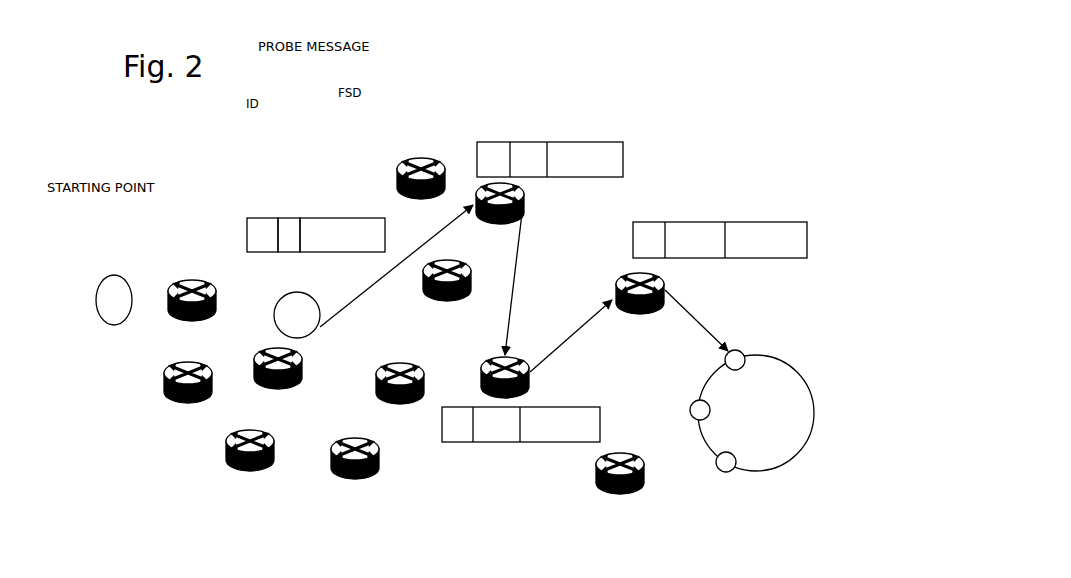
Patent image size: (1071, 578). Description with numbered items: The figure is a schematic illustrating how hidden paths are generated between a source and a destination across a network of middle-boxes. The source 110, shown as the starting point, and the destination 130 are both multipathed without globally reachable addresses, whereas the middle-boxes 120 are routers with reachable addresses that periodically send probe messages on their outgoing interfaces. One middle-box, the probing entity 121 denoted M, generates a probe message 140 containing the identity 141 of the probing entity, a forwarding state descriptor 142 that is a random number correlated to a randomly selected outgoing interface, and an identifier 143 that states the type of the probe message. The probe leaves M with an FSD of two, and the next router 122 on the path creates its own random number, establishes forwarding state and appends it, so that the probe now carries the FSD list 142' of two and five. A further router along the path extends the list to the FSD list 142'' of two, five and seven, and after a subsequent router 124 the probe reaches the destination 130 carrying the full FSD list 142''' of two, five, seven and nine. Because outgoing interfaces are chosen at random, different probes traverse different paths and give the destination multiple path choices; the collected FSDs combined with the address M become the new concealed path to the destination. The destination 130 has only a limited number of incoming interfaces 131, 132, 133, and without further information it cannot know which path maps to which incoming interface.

The source 110 is at (113, 326).
The middle-boxes 120 is at (178, 401).
The probing entity M 121 is at (274, 311).
The next router 122 is at (527, 199).
The router on probe path 124 is at (667, 289).
The destination 130 is at (770, 476).
The incoming interface 131 is at (718, 473).
The incoming interface 132 is at (690, 410).
The incoming interface 133 is at (723, 360).
The probe message 140 is at (335, 155).
The identity of the probing entity 141 is at (258, 218).
The forwarding state descriptor (FSD) 142 is at (318, 184).
The identifier of probe message type 143 is at (365, 217).
The forwarding state descriptor (FSD) 142' is at (559, 133).
The forwarding state descriptor (FSD) 142'' is at (523, 473).
The forwarding state descriptor (FSD) 142''' is at (721, 213).